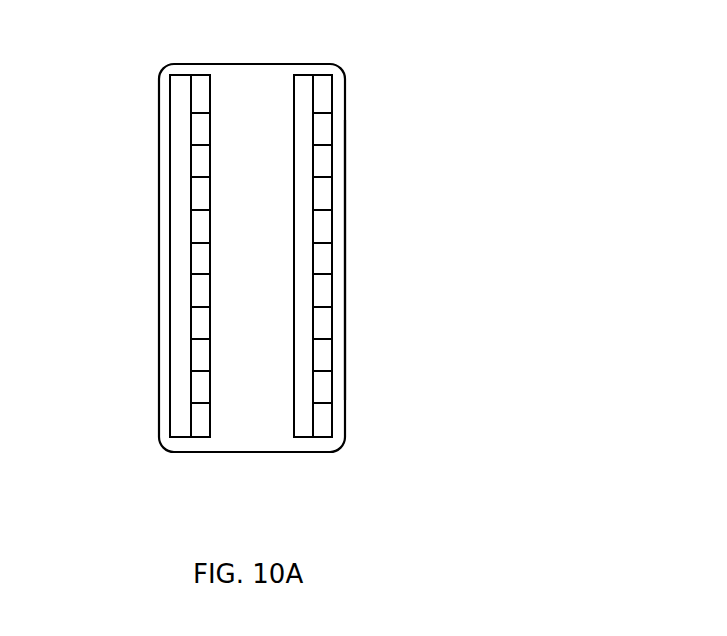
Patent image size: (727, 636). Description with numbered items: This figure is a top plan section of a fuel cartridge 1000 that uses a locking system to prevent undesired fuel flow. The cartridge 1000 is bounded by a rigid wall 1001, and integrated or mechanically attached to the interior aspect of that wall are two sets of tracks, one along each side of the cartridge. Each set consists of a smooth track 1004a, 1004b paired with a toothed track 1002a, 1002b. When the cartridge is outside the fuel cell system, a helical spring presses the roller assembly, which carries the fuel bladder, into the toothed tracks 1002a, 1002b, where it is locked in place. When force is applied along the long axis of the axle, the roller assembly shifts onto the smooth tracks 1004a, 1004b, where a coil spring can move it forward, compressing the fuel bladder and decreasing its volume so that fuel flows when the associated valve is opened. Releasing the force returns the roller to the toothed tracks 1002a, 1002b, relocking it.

The cartridge 1000 is at (159, 256).
The rigid wall 1001 is at (345, 222).
The toothed track 1002a is at (199, 437).
The toothed track 1002b is at (322, 437).
The smooth track 1004a is at (182, 75).
The smooth track 1004b is at (303, 75).